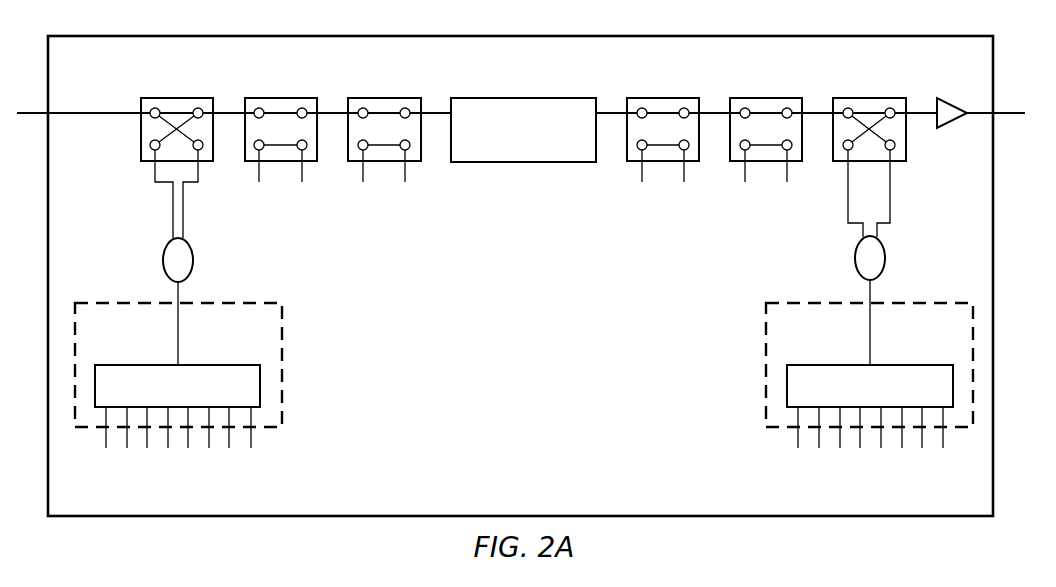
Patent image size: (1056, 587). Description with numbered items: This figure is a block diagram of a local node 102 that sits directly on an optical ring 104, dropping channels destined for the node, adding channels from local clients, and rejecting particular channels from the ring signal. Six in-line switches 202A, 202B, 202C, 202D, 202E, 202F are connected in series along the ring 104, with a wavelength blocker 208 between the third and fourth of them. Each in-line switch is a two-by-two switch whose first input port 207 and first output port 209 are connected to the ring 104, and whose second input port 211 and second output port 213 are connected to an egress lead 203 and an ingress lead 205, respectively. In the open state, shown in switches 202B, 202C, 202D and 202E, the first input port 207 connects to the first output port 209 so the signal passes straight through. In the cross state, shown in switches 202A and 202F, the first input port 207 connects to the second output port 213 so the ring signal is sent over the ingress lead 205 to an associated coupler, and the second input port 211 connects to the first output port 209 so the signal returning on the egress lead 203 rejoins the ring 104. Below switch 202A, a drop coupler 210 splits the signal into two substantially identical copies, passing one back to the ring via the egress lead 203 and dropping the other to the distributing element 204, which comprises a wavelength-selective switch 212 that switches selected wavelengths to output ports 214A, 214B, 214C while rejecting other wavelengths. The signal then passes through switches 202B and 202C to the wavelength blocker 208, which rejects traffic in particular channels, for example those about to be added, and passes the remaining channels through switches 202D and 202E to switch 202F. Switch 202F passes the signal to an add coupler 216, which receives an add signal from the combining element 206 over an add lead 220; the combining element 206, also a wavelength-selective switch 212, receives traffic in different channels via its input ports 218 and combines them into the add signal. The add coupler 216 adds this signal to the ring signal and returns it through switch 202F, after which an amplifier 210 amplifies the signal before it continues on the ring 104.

The local node 102 is at (504, 348).
The ring 104 is at (1023, 112).
The in-line switch 202A is at (141, 128).
The in-line switch 202B is at (278, 97).
The in-line switch 202C is at (385, 97).
The in-line switch 202D is at (662, 97).
The in-line switch 202E is at (755, 97).
The in-line switch 202F is at (870, 97).
The egress lead 203 is at (173, 210).
The distributing element 204 is at (283, 386).
The ingress lead 205 is at (183, 218).
The combining element 206 is at (766, 386).
The first input port 207 is at (155, 107).
The wavelength blocker 208 is at (522, 97).
The first output port 209 is at (199, 107).
The drop coupler 210 is at (163, 262).
The second input port 211 is at (150, 147).
The wavelength-selective switch 212 is at (226, 365).
The second output port 213 is at (204, 147).
The output port 214A is at (106, 448).
The output port 214B is at (168, 448).
The output port 214C is at (251, 448).
The add coupler 216 is at (885, 265).
The input port 218 is at (798, 448).
The add lead 220 is at (178, 331).